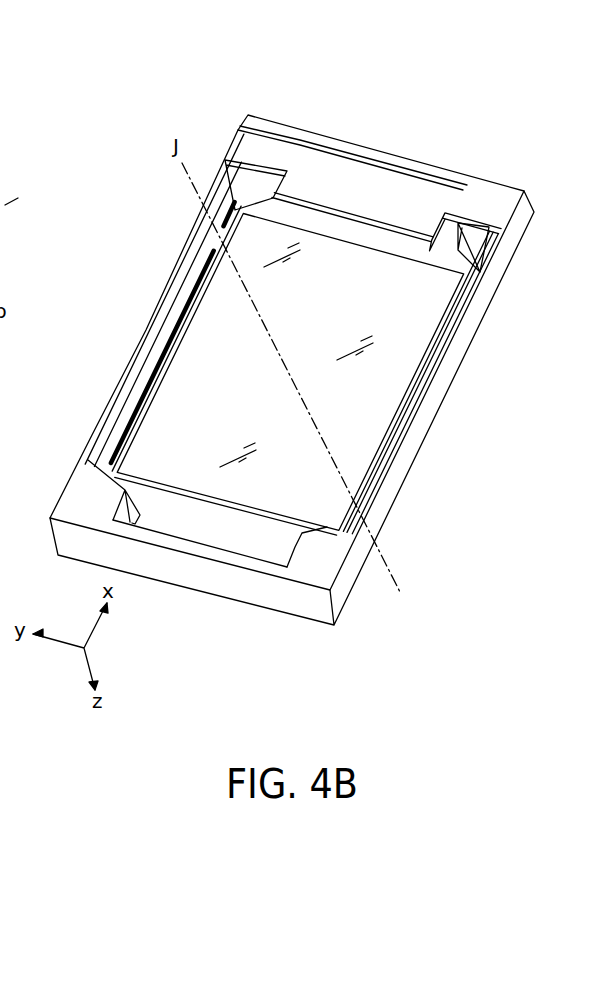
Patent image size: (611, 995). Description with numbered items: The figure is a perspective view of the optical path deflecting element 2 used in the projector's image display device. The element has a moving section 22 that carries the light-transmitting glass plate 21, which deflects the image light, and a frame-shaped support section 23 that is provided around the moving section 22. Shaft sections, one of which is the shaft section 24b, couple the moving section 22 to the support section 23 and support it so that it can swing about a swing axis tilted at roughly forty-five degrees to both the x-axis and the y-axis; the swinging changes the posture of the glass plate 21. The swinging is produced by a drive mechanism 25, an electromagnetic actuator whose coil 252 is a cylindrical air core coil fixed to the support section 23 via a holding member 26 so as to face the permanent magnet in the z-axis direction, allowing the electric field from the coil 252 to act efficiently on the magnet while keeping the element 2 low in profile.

The optical path deflecting element 2 is at (541, 121).
The glass plate 21 is at (368, 405).
The moving section 22 is at (263, 543).
The frame-shaped support section 23 is at (267, 127).
The shaft section 24b is at (218, 241).
The drive mechanism 25 is at (354, 145).
The coil 252 is at (360, 233).
The holding member 26 is at (480, 208).